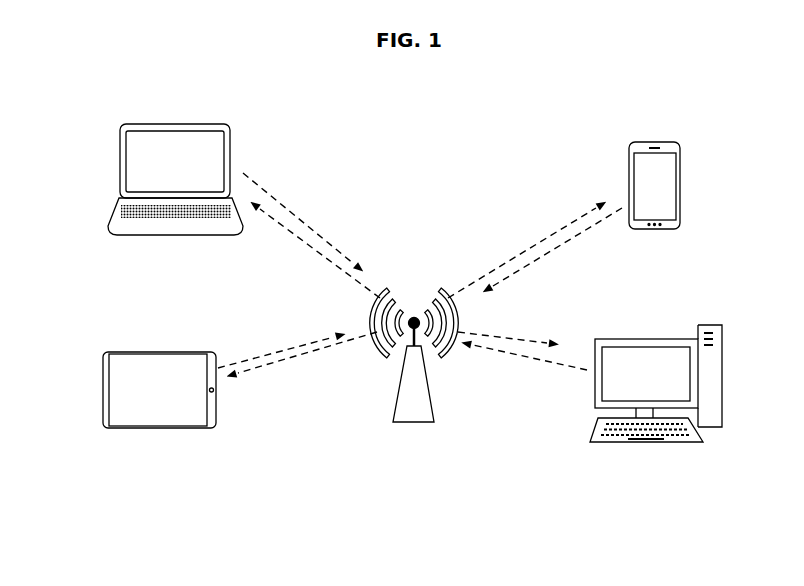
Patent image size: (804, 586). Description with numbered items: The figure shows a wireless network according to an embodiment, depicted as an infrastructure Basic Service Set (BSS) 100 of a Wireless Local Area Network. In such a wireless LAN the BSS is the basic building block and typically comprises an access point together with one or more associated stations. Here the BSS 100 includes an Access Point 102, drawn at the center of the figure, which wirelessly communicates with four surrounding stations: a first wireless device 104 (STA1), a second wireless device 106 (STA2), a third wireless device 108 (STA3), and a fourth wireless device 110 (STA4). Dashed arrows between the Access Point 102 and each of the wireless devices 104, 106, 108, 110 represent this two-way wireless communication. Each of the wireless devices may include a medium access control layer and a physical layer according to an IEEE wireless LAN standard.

The infrastructure Basic Service Set (BSS) 100 is at (141, 92).
The access point 102 is at (418, 424).
The first wireless device 104 is at (103, 383).
The second wireless device 106 is at (119, 161).
The third wireless device 108 is at (668, 142).
The fourth wireless device 110 is at (660, 338).